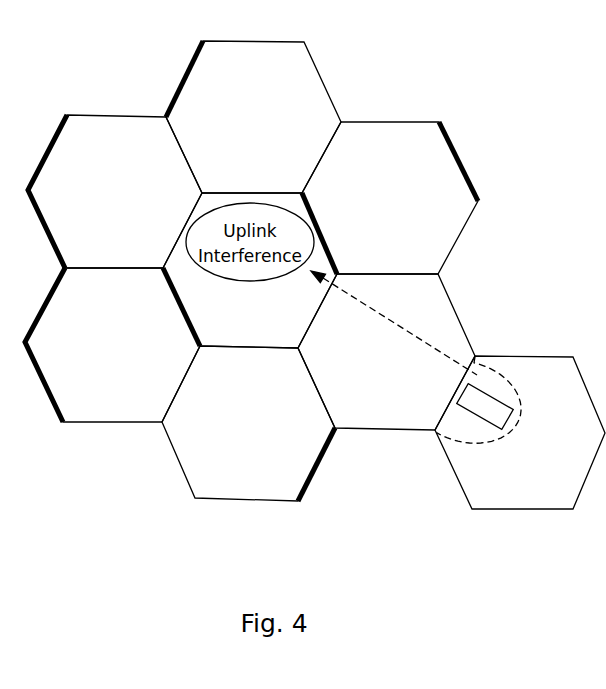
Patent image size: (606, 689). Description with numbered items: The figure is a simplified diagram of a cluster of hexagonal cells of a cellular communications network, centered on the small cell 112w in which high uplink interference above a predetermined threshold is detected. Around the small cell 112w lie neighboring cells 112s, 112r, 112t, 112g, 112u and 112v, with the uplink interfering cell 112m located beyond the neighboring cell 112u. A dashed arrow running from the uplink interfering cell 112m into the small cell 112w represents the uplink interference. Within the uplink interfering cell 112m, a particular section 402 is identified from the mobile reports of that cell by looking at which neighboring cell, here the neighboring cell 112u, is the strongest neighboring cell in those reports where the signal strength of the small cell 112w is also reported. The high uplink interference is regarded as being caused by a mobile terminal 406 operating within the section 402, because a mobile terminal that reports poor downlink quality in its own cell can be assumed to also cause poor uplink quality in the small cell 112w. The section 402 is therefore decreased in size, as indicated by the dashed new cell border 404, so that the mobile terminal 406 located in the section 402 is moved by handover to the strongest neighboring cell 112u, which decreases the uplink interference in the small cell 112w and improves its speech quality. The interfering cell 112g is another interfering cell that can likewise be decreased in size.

The cell 112s is at (253, 117).
The cell 112r is at (115, 191).
The cell 112t is at (390, 198).
The small cell 112w is at (250, 270).
The interfering cell 112g is at (112, 345).
The neighboring cell 112u is at (386, 352).
The cell 112v is at (248, 423).
The uplink interfering cell 112m is at (520, 432).
The section 402 is at (490, 367).
The new cell border 404 is at (517, 385).
The mobile terminal 406 is at (485, 407).